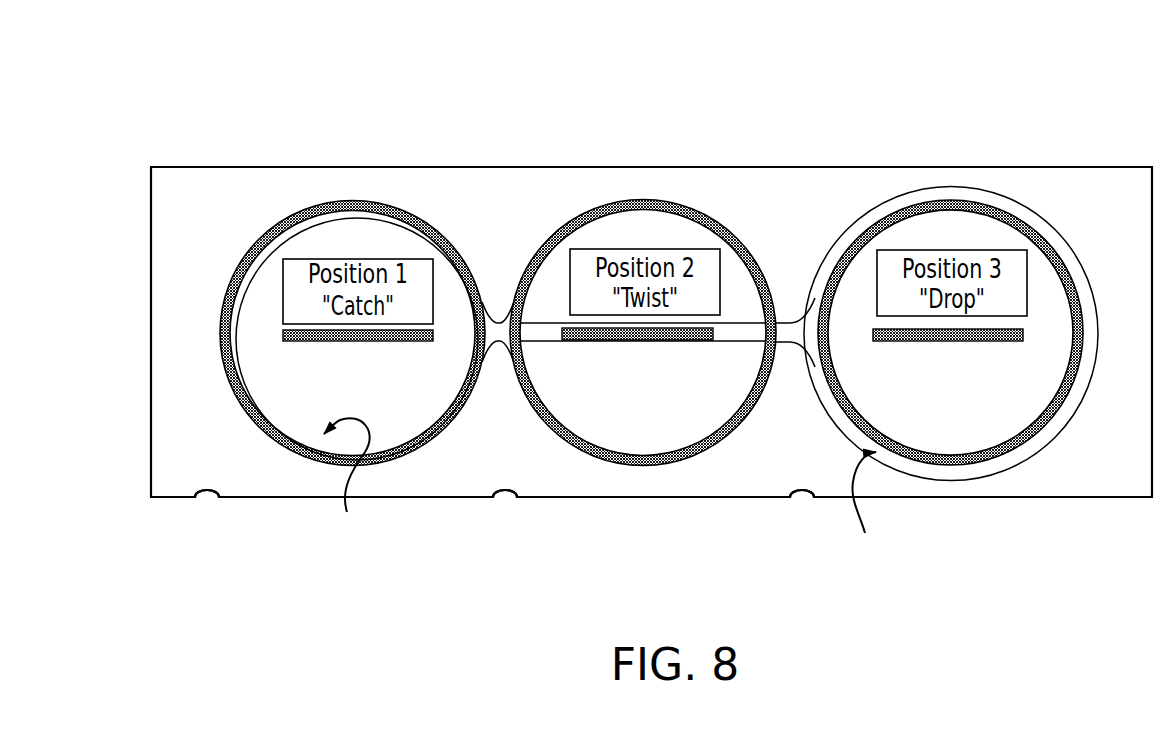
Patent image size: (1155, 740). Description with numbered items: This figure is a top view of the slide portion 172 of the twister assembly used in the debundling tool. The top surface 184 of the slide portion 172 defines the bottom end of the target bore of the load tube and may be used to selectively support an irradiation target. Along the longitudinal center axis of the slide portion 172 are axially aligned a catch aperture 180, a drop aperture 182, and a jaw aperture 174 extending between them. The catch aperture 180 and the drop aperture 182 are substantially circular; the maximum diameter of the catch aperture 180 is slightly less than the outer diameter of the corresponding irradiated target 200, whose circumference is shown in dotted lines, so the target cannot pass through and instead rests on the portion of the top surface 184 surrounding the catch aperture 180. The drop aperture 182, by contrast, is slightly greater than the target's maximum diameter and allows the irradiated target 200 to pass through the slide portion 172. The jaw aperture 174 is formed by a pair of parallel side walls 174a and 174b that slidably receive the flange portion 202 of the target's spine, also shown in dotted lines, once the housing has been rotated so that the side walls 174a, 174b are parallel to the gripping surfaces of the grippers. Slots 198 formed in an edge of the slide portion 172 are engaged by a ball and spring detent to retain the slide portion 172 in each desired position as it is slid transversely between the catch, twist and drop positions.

The slide portion 172 is at (728, 120).
The jaw aperture 174 is at (545, 358).
The parallel side wall 174a is at (535, 323).
The parallel side wall 174b is at (759, 343).
The catch aperture 180 is at (350, 481).
The drop aperture 182 is at (951, 379).
The top surface 184 is at (366, 184).
The slots 198 is at (207, 519).
The irradiated target 200 is at (269, 228).
The flange portion 202 is at (397, 342).